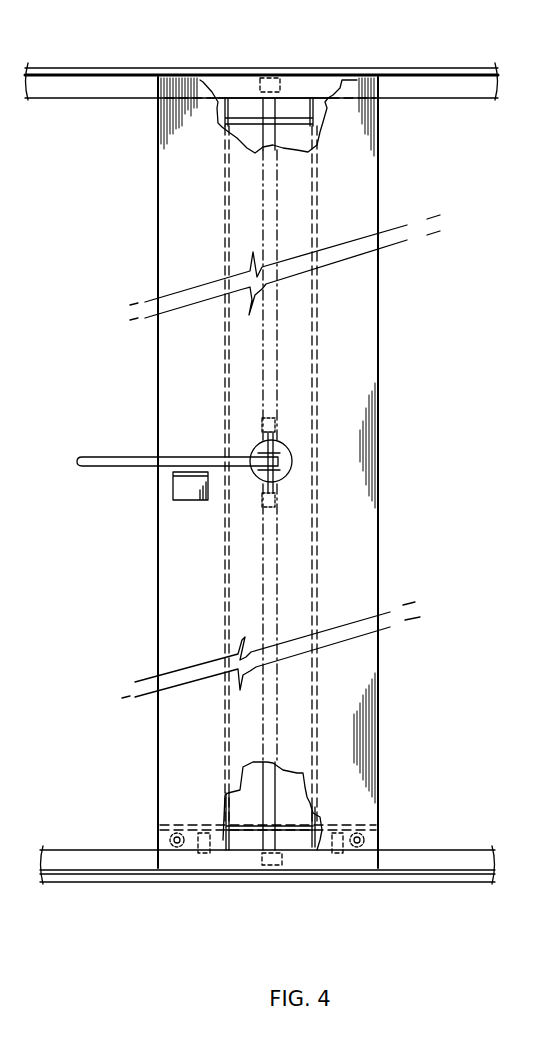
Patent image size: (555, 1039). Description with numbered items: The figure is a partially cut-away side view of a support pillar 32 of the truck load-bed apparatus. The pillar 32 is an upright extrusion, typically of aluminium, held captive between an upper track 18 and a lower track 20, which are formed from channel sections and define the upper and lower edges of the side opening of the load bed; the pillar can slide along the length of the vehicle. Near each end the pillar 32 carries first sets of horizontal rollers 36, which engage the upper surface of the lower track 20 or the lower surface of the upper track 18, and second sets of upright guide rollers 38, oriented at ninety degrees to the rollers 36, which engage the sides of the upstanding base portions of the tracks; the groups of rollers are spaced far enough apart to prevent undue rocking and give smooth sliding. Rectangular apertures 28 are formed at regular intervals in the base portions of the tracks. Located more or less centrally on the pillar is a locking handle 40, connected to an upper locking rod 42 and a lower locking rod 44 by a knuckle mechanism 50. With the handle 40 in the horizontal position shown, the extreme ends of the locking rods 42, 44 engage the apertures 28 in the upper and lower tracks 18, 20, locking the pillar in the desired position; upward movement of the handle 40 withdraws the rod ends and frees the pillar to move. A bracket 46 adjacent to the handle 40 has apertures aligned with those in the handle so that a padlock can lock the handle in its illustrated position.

The upper track 18 is at (453, 88).
The lower track 20 is at (430, 854).
The rectangular apertures 28 is at (268, 84).
The support pillar 32 is at (357, 536).
The horizontal rollers 36 is at (177, 848).
The upright guide rollers 38 is at (212, 843).
The locking handle 40 is at (151, 403).
The upper locking rod 42 is at (270, 360).
The lower locking rod 44 is at (270, 594).
The bracket 46 is at (172, 491).
The knuckle mechanism 50 is at (285, 466).